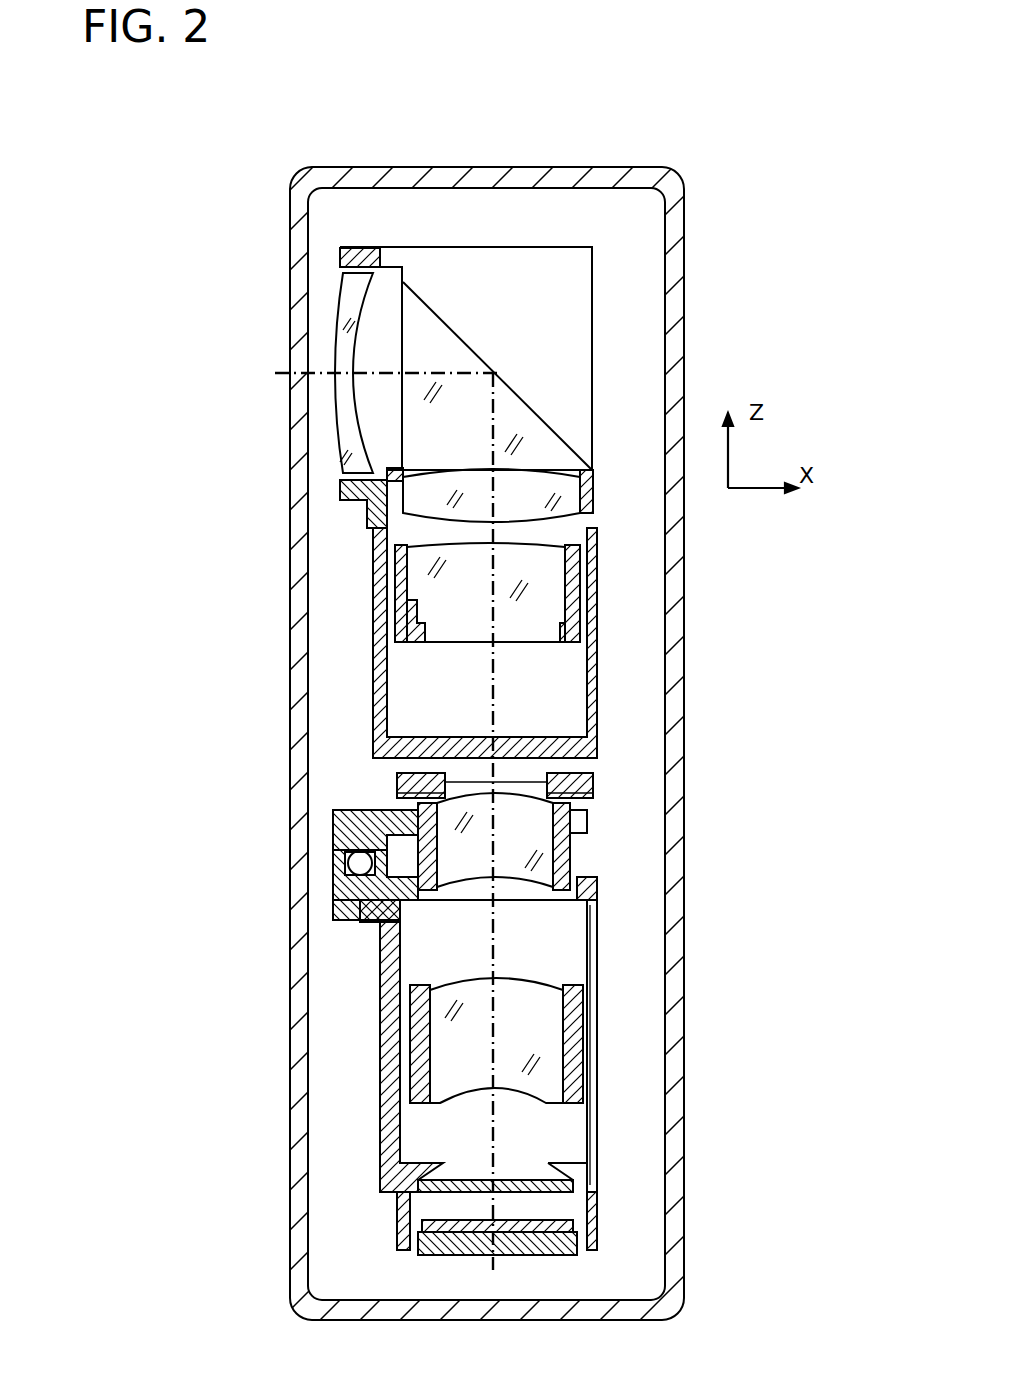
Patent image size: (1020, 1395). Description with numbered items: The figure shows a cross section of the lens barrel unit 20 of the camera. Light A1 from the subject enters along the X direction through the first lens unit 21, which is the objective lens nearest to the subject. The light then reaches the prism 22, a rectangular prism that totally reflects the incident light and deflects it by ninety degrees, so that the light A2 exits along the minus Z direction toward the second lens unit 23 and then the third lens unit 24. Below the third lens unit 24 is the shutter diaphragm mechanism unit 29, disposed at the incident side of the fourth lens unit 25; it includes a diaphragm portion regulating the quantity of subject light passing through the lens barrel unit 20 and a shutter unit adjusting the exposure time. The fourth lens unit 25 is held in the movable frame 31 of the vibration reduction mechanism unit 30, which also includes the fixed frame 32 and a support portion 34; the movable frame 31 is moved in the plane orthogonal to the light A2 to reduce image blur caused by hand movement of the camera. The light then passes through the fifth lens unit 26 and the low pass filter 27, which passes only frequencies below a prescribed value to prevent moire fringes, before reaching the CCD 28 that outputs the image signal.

The lens barrel unit 20 is at (302, 188).
The first lens unit 21 is at (348, 318).
The prism 22 is at (427, 332).
The second lens unit 23 is at (420, 502).
The third lens unit 24 is at (420, 588).
The fourth lens unit 25 is at (528, 820).
The fifth lens unit 26 is at (530, 1015).
The low pass filter 27 is at (500, 1185).
The CCD 28 is at (513, 1243).
The shutter diaphragm mechanism unit 29 is at (593, 775).
The vibration reduction mechanism unit 30 is at (290, 857).
The movable frame 31 is at (350, 830).
The fixed frame 32 is at (350, 888).
The support portion 34 is at (350, 858).
The light A1 is at (264, 371).
The light A2 is at (493, 672).